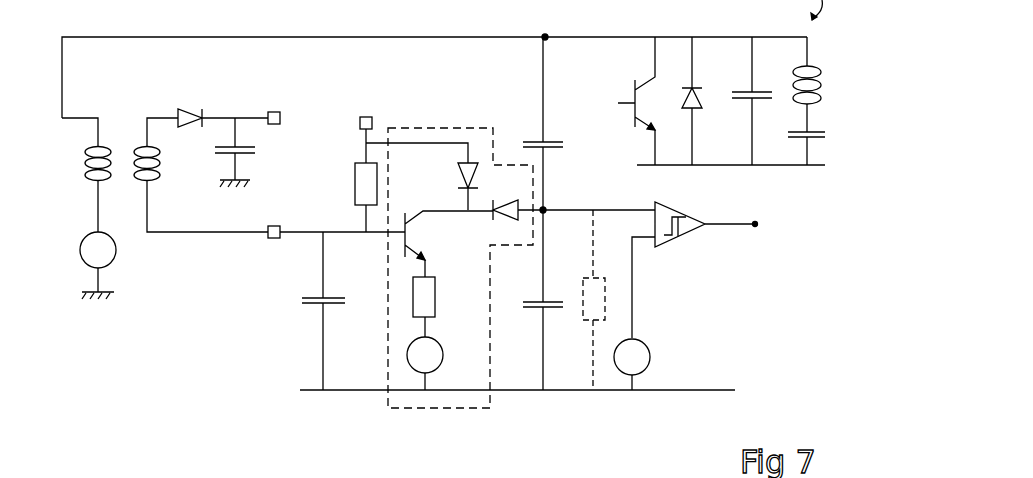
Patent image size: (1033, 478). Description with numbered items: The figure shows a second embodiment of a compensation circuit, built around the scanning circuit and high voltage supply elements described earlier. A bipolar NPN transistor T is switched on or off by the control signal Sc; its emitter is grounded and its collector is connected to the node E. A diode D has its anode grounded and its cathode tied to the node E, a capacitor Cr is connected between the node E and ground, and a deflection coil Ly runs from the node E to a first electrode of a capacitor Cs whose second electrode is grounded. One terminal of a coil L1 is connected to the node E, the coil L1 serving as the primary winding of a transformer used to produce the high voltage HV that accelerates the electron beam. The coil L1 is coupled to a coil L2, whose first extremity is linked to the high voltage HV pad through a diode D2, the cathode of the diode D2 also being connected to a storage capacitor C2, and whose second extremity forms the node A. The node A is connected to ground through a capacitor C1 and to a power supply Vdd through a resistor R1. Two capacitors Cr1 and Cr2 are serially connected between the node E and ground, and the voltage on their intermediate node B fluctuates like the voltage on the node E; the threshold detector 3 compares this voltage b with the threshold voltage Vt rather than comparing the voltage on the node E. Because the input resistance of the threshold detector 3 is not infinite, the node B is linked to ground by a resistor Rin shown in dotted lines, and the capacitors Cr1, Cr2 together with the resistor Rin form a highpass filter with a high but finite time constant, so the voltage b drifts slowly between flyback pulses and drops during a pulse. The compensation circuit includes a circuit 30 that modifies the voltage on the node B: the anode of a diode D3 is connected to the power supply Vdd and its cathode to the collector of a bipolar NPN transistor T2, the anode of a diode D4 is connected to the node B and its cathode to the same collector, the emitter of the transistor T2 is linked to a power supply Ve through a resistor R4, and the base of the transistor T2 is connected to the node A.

The circuit 30 is at (428, 128).
The threshold detector 3 is at (686, 234).
The node A is at (266, 240).
The node B is at (548, 208).
The node E is at (543, 27).
The coil L1 is at (84, 164).
The coil L2 is at (201, 175).
The diode D2 is at (223, 108).
The high voltage HV is at (268, 107).
The storage capacitor C2 is at (246, 152).
The capacitor C1 is at (317, 311).
The power supply Vdd is at (404, 127).
The resistor R1 is at (351, 197).
The diode D3 is at (451, 186).
The diode D4 is at (574, 201).
The bipolar NPN transistor T2 is at (449, 244).
The resistor R4 is at (436, 307).
The power supply Ve is at (440, 363).
The capacitor Cr1 is at (534, 169).
The capacitor Cr2 is at (534, 335).
The input resistor Rin is at (582, 318).
The threshold voltage Vt is at (632, 364).
The bipolar NPN transistor T is at (639, 101).
The control signal Sc is at (607, 99).
The diode D is at (700, 101).
The capacitor Cr is at (753, 101).
The deflection coil Ly is at (798, 84).
The capacitor Cs is at (801, 148).